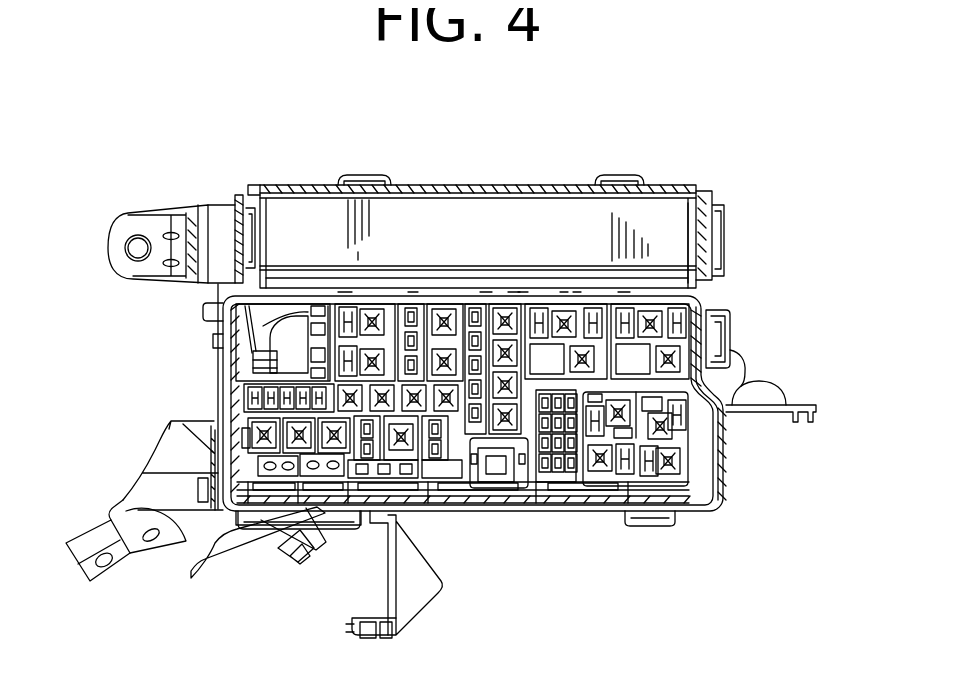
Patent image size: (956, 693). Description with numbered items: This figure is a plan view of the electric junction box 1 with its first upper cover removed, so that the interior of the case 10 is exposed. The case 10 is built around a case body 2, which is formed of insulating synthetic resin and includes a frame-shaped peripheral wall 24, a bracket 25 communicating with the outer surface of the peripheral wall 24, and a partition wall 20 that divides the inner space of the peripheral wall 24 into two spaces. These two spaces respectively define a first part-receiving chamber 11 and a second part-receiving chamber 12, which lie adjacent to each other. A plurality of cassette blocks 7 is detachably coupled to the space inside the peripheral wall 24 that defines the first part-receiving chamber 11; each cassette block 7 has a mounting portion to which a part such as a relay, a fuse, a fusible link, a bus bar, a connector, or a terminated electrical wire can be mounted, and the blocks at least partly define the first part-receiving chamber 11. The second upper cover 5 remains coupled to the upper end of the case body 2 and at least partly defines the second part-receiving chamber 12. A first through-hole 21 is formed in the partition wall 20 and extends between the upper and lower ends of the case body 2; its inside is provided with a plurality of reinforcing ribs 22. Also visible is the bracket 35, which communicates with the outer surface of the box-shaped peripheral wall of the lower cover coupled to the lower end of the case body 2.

The electric junction box 1 is at (773, 141).
The case body 2 is at (500, 511).
The second upper cover 5 is at (571, 209).
The cassette blocks 7 is at (617, 284).
The case 10 is at (465, 542).
The first part-receiving chamber 11 is at (526, 505).
The second part-receiving chamber 12 is at (652, 212).
The partition wall 20 is at (336, 282).
The first through-hole 21 is at (432, 280).
The reinforcing ribs 22 is at (406, 282).
The peripheral wall 24 is at (210, 368).
The bracket 25 is at (126, 210).
The bracket 35 is at (728, 358).